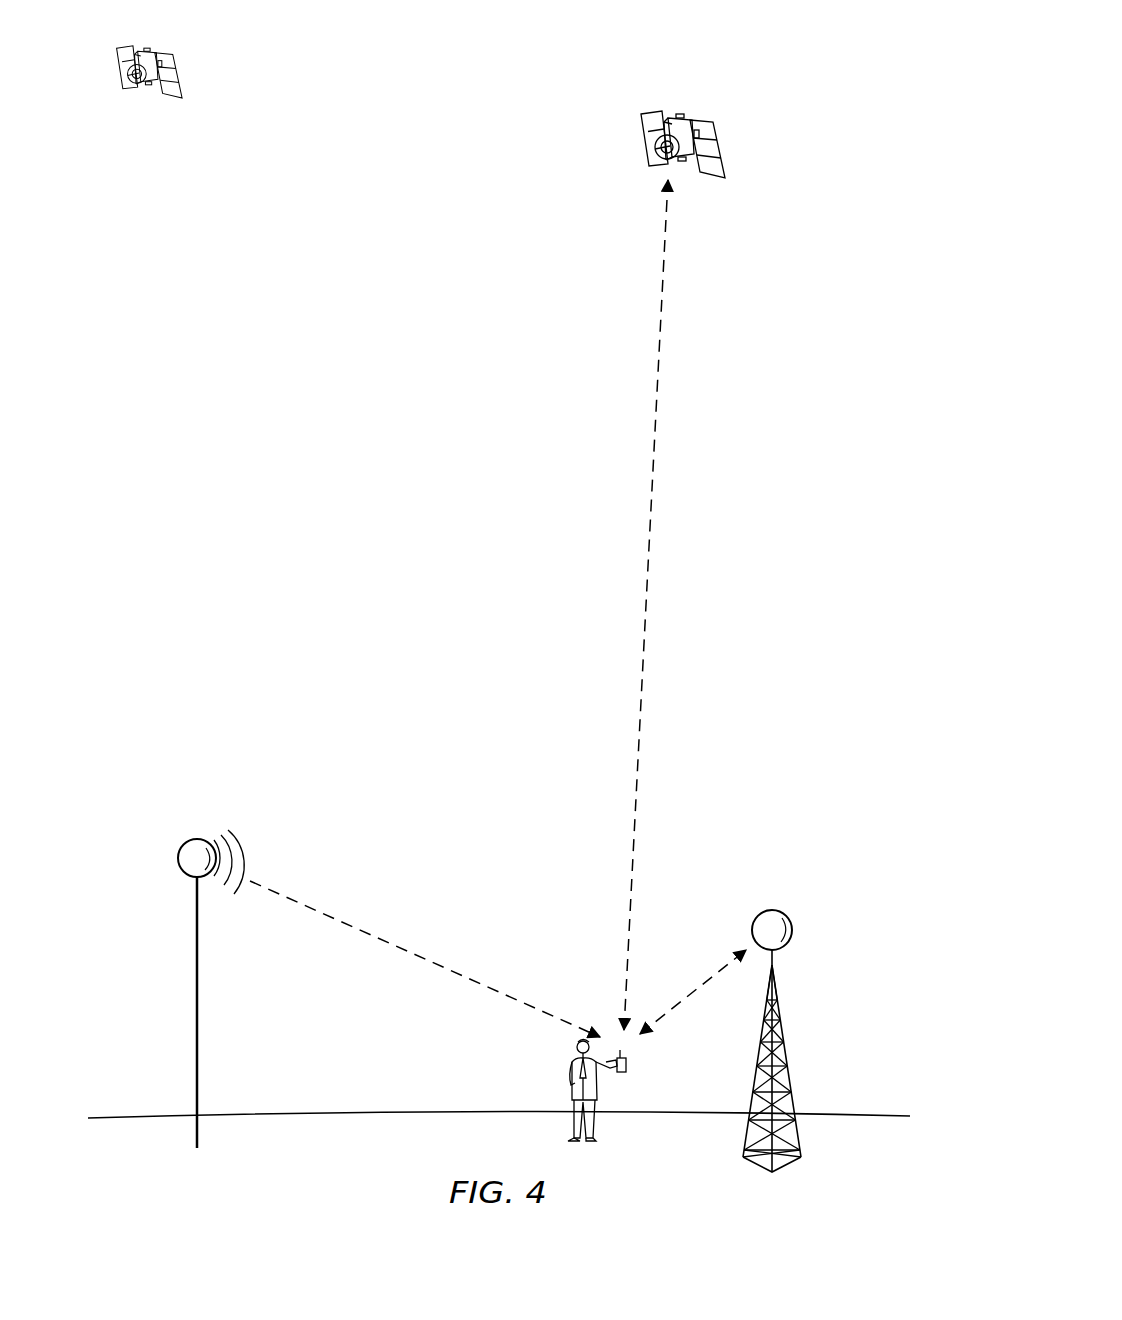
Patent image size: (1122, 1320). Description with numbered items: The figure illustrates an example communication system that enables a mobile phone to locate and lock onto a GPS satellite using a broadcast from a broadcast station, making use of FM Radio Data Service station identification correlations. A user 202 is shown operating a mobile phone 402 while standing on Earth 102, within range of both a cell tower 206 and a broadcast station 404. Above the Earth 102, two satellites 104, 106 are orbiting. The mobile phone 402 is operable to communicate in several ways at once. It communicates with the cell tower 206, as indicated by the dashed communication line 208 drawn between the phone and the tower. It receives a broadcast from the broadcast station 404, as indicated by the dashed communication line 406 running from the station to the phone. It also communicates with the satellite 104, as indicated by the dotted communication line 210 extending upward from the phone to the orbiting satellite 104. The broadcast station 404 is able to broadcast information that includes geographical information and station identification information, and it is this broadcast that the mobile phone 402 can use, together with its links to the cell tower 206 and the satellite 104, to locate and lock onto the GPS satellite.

The Earth 102 is at (306, 1183).
The satellite 104 is at (682, 118).
The satellite 106 is at (147, 50).
The user 202 is at (570, 1074).
The cell tower 206 is at (789, 1053).
The dashed communication line 208 is at (695, 992).
The dotted communication line 210 is at (649, 516).
The mobile phone 402 is at (628, 1067).
The broadcast station 404 is at (196, 1014).
The dashed communication line 406 is at (407, 953).